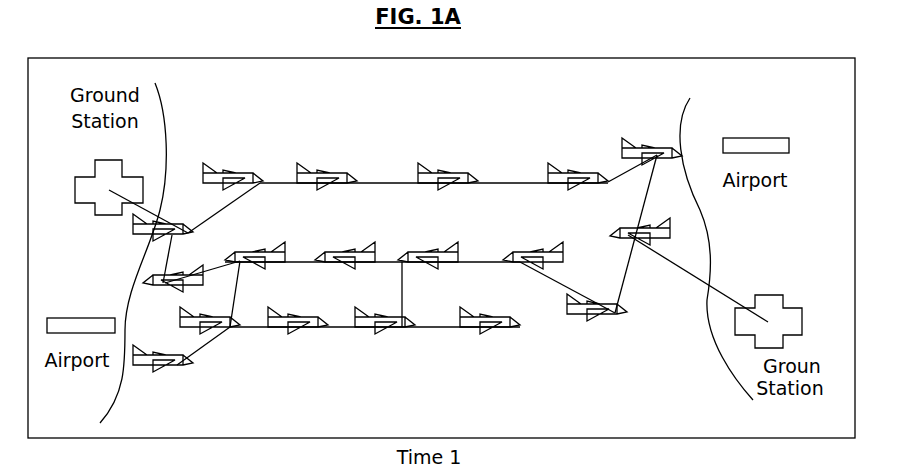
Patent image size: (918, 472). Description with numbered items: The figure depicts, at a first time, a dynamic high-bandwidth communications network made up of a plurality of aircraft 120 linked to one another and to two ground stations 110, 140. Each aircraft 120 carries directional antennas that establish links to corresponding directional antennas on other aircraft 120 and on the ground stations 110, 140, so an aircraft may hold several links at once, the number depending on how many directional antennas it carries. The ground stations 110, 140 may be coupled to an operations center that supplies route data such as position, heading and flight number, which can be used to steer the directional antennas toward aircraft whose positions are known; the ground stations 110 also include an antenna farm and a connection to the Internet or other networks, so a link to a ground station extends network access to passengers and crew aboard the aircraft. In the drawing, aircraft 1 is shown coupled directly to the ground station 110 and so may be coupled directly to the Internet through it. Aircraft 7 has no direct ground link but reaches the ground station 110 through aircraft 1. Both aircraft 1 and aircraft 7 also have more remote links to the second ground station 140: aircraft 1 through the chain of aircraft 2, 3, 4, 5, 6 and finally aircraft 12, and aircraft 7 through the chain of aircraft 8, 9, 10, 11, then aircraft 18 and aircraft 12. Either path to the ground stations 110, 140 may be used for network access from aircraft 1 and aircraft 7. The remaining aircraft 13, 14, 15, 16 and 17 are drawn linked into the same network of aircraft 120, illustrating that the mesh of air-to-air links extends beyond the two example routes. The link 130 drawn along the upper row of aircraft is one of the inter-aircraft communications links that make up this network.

The aircraft 1 is at (167, 220).
The aircraft 2 is at (233, 166).
The aircraft 3 is at (327, 168).
The aircraft 4 is at (448, 168).
The aircraft 5 is at (578, 170).
The aircraft 6 is at (652, 138).
The aircraft 7 is at (173, 268).
The aircraft 8 is at (255, 243).
The aircraft 9 is at (345, 243).
The aircraft 10 is at (436, 243).
The aircraft 11 is at (533, 244).
The aircraft 12 is at (641, 215).
The aircraft 13 is at (163, 348).
The aircraft 14 is at (210, 310).
The aircraft 15 is at (298, 313).
The aircraft 16 is at (385, 310).
The aircraft 17 is at (490, 309).
The aircraft 18 is at (597, 298).
The ground station 110 is at (82, 152).
The aircraft 120 is at (220, 143).
The communication link 130 is at (373, 183).
The ground station 140 is at (765, 296).